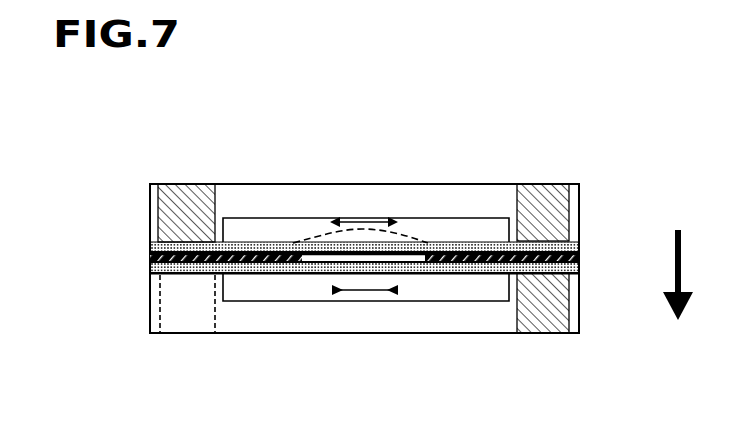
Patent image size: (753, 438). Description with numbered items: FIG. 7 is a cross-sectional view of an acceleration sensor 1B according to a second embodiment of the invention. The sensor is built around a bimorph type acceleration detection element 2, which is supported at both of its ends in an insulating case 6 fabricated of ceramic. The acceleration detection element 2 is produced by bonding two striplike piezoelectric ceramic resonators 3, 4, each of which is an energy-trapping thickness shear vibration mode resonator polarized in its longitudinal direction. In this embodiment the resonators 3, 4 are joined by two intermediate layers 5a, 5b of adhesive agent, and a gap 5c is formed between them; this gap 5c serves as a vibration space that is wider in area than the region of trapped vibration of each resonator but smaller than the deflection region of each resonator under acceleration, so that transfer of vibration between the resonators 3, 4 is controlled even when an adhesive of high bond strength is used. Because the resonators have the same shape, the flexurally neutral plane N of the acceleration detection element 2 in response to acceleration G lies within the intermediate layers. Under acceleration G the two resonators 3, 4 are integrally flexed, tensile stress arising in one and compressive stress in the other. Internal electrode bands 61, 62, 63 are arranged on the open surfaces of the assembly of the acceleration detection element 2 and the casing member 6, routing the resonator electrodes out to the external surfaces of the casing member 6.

The acceleration sensor 1B is at (127, 199).
The acceleration detection element 2 is at (520, 110).
The piezoelectric ceramic resonator 3 is at (455, 250).
The piezoelectric ceramic resonator 4 is at (427, 243).
The intermediate layer 5a is at (265, 243).
The intermediate layer 5b is at (485, 243).
The gap 5c is at (410, 258).
The insulating case 6 is at (307, 184).
The internal electrode band 61 is at (545, 184).
The internal electrode band 62 is at (185, 184).
The internal electrode band 63 is at (150, 310).
The flexurally neutral plane N is at (360, 213).
The acceleration G is at (678, 253).